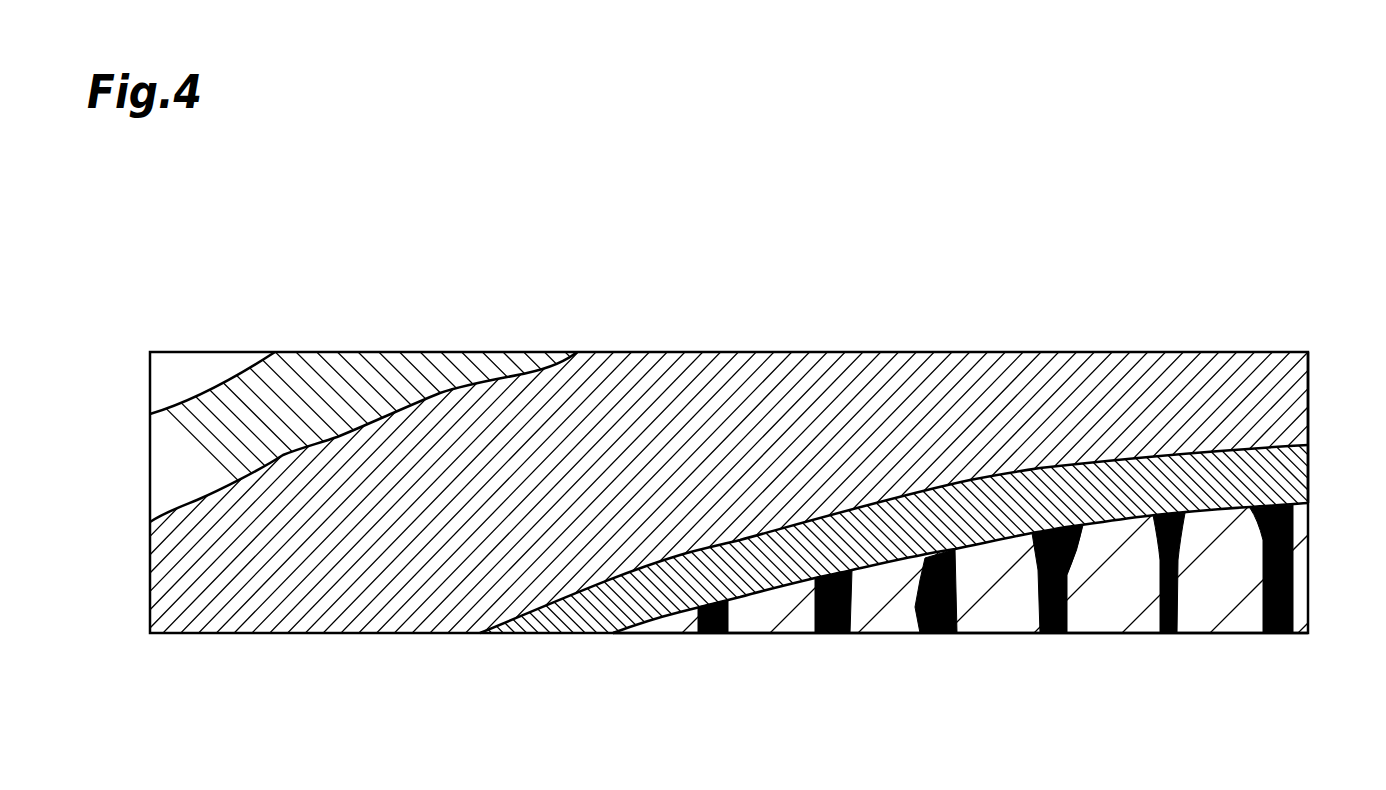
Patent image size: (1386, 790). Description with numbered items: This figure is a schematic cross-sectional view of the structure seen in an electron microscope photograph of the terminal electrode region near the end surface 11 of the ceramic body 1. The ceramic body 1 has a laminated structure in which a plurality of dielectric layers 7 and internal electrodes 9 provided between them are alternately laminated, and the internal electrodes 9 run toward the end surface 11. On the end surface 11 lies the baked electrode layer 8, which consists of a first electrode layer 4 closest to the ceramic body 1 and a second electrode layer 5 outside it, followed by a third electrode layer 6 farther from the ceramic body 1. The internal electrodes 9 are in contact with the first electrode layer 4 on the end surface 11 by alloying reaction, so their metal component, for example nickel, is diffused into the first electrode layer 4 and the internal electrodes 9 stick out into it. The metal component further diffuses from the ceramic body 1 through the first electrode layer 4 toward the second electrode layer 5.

The ceramic body 1 is at (1316, 507).
The first electrode layer 4 is at (1316, 447).
The second electrode layer 5 is at (143, 525).
The third electrode layer 6 is at (143, 413).
The dielectric layers 7 is at (1229, 607).
The baked electrode layer 8 is at (1349, 385).
The internal electrodes 9 is at (1052, 633).
The end surface 11 is at (1132, 518).